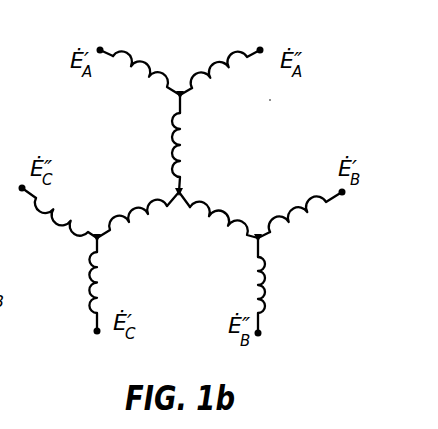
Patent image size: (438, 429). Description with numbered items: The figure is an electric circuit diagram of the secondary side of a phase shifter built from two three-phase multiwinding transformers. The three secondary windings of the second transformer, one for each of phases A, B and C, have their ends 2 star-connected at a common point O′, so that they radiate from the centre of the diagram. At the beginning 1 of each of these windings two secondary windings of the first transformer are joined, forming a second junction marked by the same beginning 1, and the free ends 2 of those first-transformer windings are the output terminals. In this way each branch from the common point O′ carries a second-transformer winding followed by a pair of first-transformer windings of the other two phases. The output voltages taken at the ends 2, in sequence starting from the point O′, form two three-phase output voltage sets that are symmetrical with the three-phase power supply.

The winding beginning 1 is at (181, 166).
The winding end 2 is at (182, 180).
The common point O′ is at (183, 207).